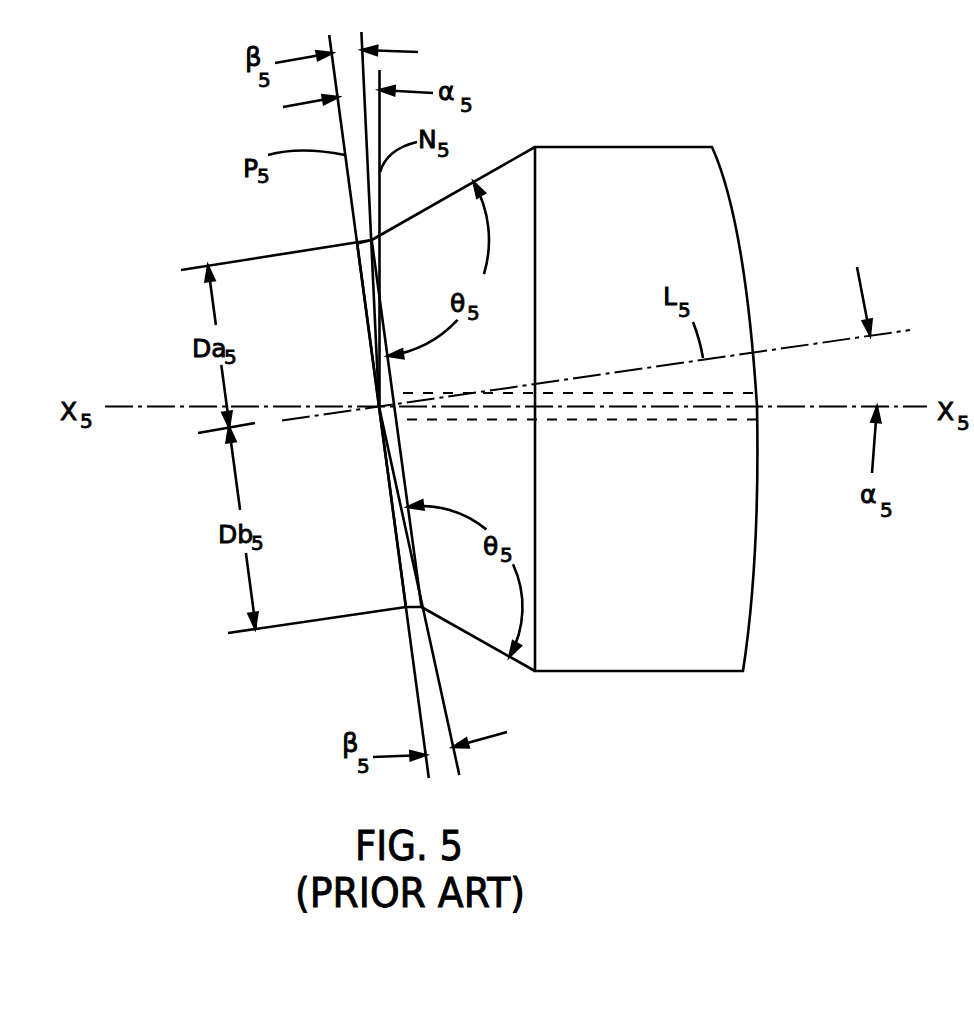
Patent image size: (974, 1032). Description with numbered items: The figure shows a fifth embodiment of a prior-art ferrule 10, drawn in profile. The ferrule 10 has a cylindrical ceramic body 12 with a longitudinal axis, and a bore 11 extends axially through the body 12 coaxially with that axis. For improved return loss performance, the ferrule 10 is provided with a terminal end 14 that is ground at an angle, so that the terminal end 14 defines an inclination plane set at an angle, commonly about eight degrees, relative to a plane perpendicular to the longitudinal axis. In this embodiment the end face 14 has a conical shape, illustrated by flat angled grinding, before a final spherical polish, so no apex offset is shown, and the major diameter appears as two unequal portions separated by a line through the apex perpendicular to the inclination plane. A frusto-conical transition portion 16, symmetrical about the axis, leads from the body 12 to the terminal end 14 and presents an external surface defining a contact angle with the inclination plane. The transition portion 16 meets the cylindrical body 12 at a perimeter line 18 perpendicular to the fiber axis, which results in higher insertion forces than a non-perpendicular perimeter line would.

The ferrule 10 is at (755, 187).
The bore 11 is at (658, 420).
The cylindrical ceramic body 12 is at (717, 601).
The terminal end 14 is at (404, 534).
The transition portion 16 is at (487, 628).
The perimeter line 18 is at (537, 240).